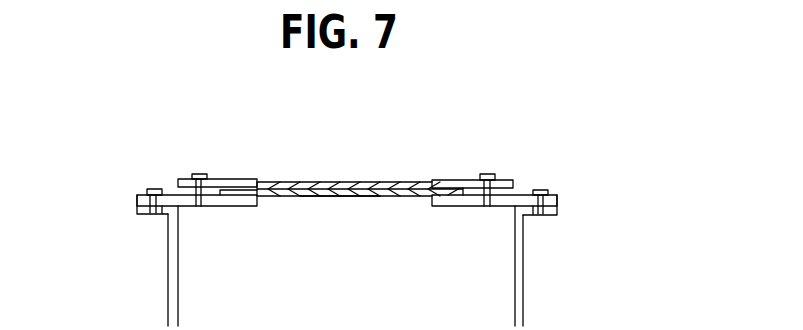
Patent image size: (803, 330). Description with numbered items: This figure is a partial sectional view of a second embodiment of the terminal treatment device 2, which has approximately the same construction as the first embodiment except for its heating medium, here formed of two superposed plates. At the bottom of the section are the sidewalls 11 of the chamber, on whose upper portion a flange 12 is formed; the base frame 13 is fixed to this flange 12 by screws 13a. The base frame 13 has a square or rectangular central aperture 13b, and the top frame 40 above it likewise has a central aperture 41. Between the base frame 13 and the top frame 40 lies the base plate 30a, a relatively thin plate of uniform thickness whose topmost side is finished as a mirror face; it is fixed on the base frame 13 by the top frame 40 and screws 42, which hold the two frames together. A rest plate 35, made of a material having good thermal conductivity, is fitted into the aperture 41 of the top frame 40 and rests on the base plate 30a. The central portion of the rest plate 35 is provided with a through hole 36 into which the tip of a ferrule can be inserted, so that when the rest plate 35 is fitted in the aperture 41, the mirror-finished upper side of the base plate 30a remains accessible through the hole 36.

The terminal treatment device 2 is at (548, 131).
The sidewalls 11 is at (173, 292).
The flange 12 is at (162, 215).
The base frame 13 is at (458, 206).
The screws 13a is at (152, 188).
The central aperture 13b is at (266, 206).
The base plate 30a is at (337, 197).
The rest plate 35 is at (392, 182).
The through hole 36 is at (343, 182).
The top frame 40 is at (448, 180).
The aperture 41 is at (266, 180).
The screws 42 is at (198, 174).